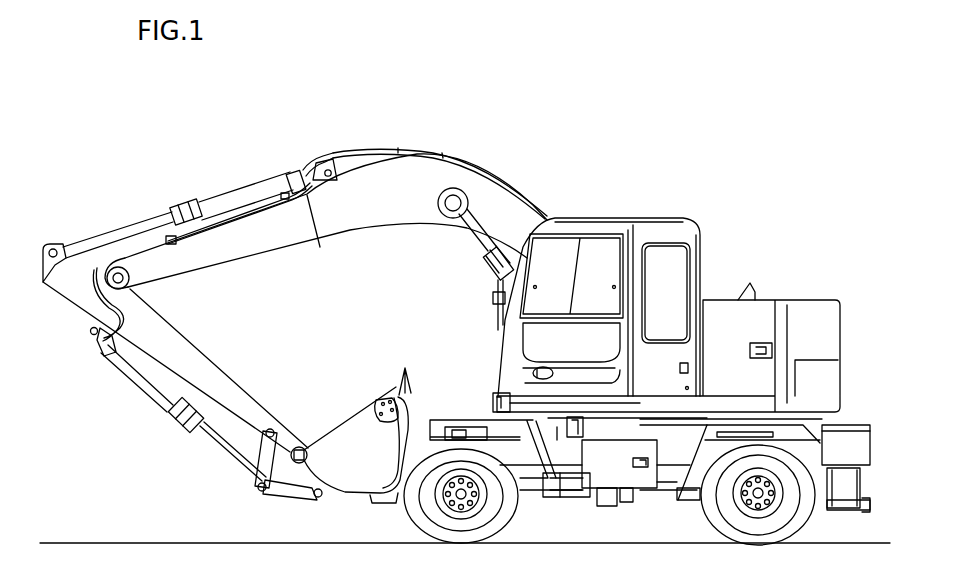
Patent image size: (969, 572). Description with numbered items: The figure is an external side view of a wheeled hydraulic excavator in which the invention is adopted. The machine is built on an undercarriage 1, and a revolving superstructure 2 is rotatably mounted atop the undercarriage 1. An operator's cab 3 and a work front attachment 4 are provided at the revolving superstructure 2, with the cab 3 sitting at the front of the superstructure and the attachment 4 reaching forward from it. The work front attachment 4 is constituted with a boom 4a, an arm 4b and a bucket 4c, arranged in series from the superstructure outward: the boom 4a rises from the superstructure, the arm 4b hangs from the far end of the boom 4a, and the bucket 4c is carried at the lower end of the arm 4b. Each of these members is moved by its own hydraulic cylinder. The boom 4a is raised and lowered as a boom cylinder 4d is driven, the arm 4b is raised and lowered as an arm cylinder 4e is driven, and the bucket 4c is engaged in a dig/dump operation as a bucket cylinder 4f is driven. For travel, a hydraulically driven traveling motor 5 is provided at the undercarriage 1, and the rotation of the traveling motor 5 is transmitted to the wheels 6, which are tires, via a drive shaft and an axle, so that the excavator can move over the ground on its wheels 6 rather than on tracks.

The undercarriage 1 is at (870, 486).
The revolving superstructure 2 is at (769, 298).
The operator's cab 3 is at (626, 220).
The work front attachment 4 is at (424, 151).
The boom 4a is at (365, 220).
The arm 4b is at (200, 350).
The bucket 4c is at (342, 424).
The boom cylinder 4d is at (482, 250).
The arm cylinder 4e is at (200, 198).
The bucket cylinder 4f is at (167, 407).
The traveling motor 5 is at (606, 509).
The wheels 6 is at (413, 523).